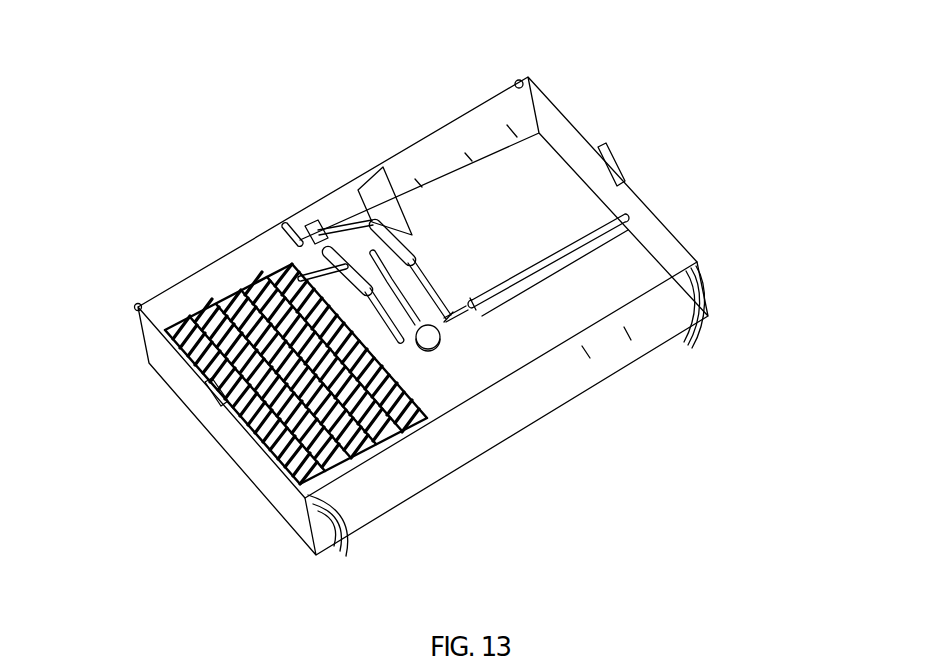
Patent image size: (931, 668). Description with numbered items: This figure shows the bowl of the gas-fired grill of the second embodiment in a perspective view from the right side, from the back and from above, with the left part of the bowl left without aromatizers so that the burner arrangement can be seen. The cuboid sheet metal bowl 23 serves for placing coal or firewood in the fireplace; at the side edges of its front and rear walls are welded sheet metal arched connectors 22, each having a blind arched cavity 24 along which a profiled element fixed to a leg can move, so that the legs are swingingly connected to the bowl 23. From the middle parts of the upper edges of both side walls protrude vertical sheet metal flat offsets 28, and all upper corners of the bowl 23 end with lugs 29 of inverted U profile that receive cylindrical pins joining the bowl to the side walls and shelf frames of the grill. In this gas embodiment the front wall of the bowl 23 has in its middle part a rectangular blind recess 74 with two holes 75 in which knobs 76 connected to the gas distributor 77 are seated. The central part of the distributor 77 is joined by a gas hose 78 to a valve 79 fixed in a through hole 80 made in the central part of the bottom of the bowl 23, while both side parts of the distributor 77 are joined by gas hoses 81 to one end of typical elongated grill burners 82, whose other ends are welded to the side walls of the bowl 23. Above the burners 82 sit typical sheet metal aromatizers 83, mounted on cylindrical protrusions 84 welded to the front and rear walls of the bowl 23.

The arched connector 22 is at (333, 512).
The bowl 23 is at (660, 298).
The blind arched cavity 24 is at (318, 545).
The flat offset 28 is at (208, 395).
The lug 29 is at (136, 306).
The rectangular blind recess 74 is at (340, 232).
The hole 75 is at (376, 224).
The knob 76 is at (362, 204).
The gas distributor 77 is at (290, 236).
The gas hose 78 is at (418, 300).
The valve 79 is at (447, 307).
The through hole 80 is at (441, 349).
The gas hose 81 is at (447, 318).
The grill burner 82 is at (560, 257).
The aromatizer 83 is at (317, 290).
The cylindrical protrusion 84 is at (516, 136).